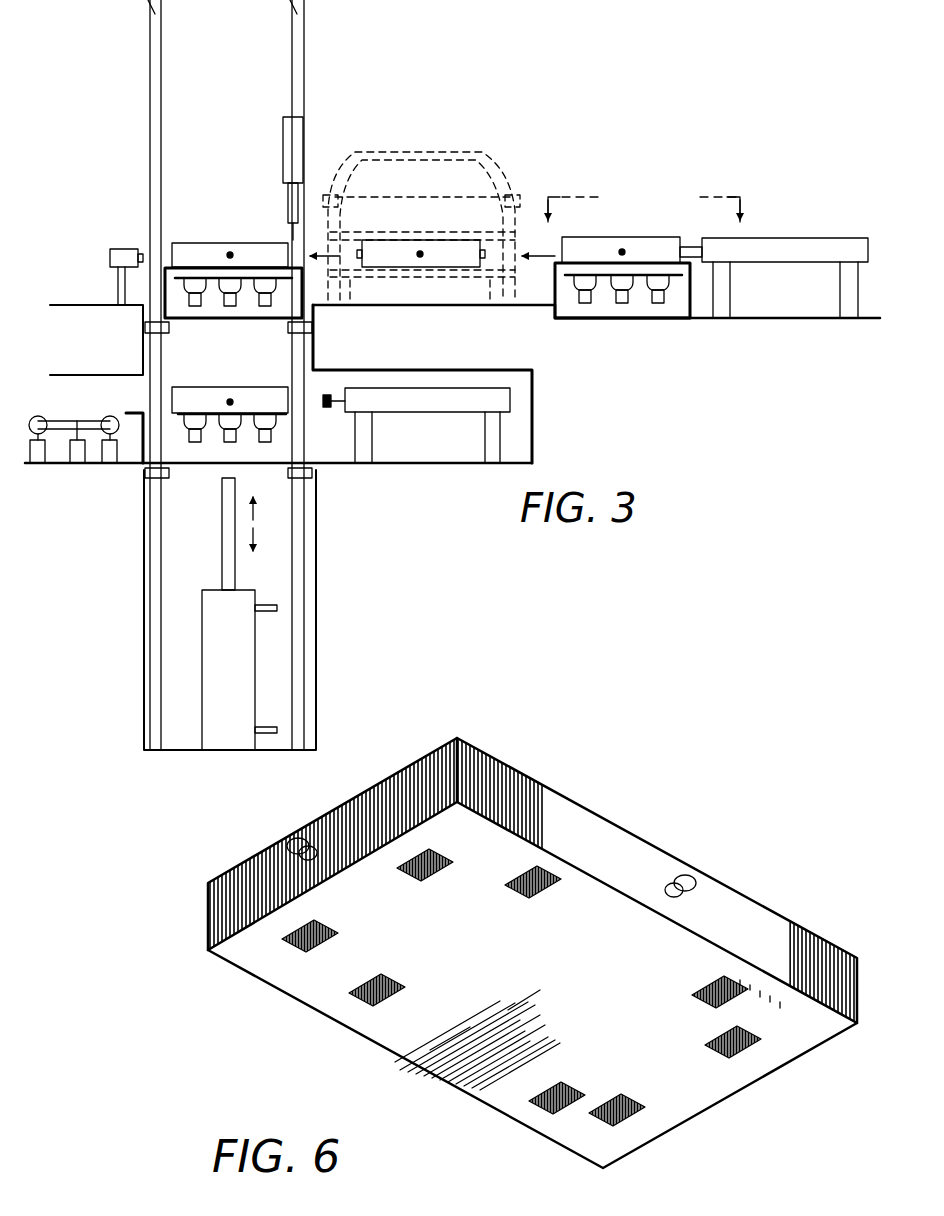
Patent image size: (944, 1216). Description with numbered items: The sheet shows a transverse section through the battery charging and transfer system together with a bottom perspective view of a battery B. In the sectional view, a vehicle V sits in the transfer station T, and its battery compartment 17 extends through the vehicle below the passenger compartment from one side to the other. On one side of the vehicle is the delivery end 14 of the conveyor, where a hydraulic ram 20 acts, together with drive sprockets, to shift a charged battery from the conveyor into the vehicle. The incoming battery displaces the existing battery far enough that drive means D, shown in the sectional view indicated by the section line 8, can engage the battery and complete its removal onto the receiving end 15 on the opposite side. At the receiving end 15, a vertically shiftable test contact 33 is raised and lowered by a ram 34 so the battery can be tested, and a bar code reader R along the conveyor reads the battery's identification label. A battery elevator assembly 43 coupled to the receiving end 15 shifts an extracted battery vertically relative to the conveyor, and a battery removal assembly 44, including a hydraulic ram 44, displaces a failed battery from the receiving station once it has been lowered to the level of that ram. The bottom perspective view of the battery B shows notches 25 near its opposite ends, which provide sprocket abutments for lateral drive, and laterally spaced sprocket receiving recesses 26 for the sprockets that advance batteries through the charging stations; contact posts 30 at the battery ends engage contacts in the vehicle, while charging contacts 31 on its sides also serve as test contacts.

In FIG. 3, the section line 8- 8 is at (647, 212).
In FIG. 3, the delivery end 14 is at (650, 168).
In FIG. 3, the receiving end 15 is at (118, 158).
In FIG. 3, the battery compartment 17 is at (350, 268).
In FIG. 3, the hydraulic ram 20 is at (755, 270).
In FIG. 6, the notches 25 is at (305, 950).
In FIG. 6, the sprocket receiving recesses 26 is at (718, 985).
In FIG. 6, the contact posts 30 is at (292, 843).
In FIG. 6, the charging contacts 31 is at (677, 877).
In FIG. 3, the test contact 33 is at (290, 240).
In FIG. 3, the ram 34 is at (282, 160).
In FIG. 3, the battery elevator assembly 43 is at (328, 498).
In FIG. 6, the battery elevator assembly 43 is at (800, 940).
In FIG. 3, the battery removal assembly 44 is at (448, 388).
In FIG. 3, the battery B is at (606, 216).
In FIG. 6, the battery B is at (632, 797).
In FIG. 3, the drive means D is at (625, 322).
In FIG. 3, the bar code reader R is at (116, 250).
In FIG. 3, the transfer station T is at (420, 225).
In FIG. 3, the vehicle V is at (472, 142).